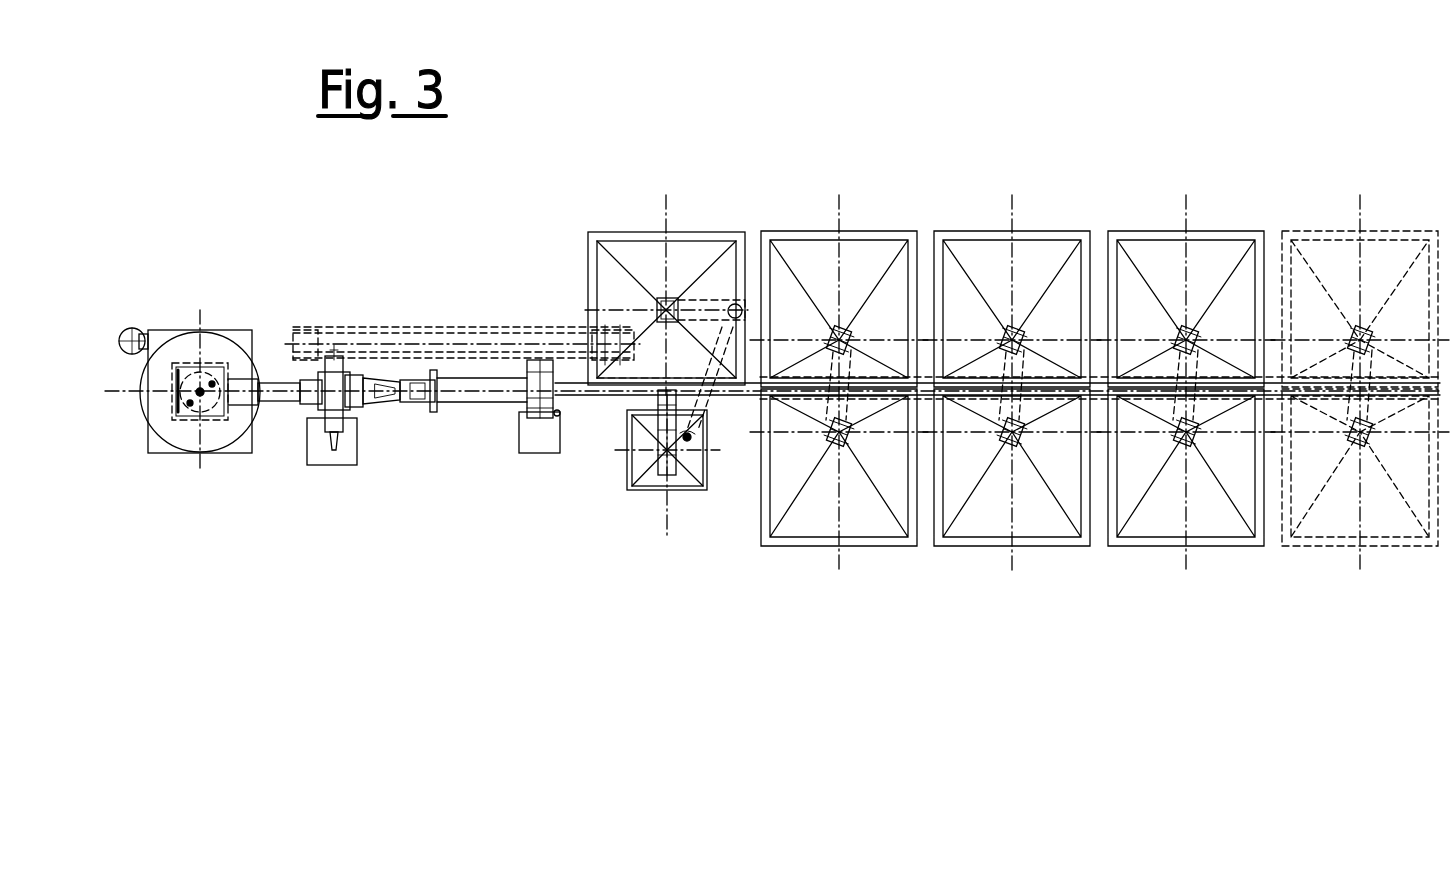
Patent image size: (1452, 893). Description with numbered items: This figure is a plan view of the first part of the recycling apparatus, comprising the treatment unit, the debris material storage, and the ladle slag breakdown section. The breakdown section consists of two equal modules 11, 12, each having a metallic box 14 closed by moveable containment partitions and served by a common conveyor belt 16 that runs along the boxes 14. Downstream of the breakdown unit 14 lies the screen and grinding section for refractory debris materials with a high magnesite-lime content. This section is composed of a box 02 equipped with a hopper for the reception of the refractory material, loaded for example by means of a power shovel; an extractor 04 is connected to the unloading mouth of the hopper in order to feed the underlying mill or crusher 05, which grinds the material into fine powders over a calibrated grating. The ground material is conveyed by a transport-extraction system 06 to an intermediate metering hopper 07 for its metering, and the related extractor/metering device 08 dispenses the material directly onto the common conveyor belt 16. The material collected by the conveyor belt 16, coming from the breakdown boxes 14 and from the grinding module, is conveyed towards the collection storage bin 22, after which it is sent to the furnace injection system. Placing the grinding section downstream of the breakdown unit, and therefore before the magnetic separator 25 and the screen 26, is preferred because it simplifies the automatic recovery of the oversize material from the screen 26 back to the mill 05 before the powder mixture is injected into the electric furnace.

The box 02 is at (636, 256).
The extractor 04 is at (672, 283).
The mill or crusher 05 is at (745, 327).
The transport-extraction system 06 is at (698, 295).
The metering hopper 07 is at (681, 480).
The extractor/metering device 08 is at (672, 403).
The module 11 is at (1012, 291).
The module 12 is at (1012, 479).
The metallic box 14 is at (1158, 253).
The common conveyor belt 16 is at (605, 395).
The collection storage bin 22 is at (222, 345).
The magnetic separator 25 is at (535, 398).
The screen 26 is at (390, 388).